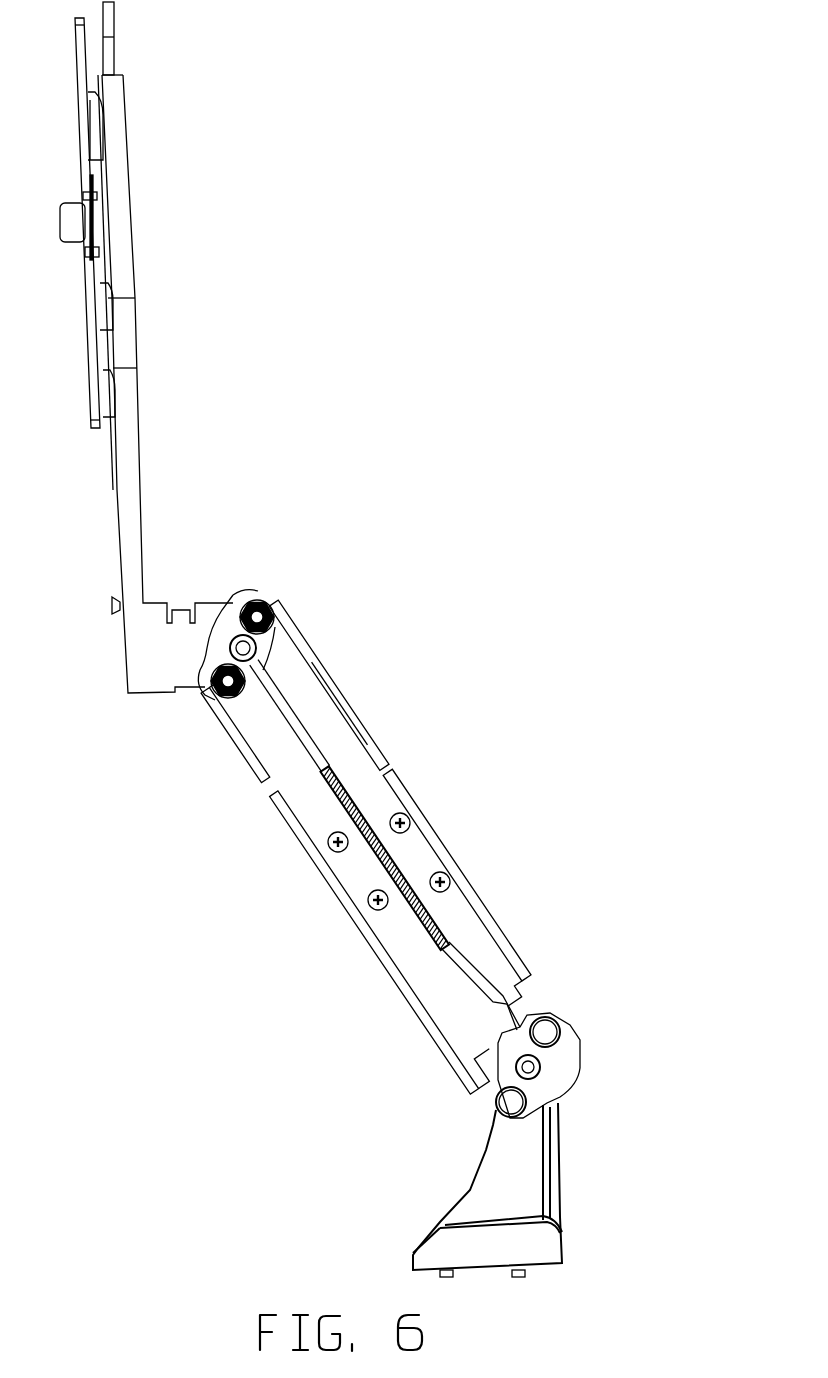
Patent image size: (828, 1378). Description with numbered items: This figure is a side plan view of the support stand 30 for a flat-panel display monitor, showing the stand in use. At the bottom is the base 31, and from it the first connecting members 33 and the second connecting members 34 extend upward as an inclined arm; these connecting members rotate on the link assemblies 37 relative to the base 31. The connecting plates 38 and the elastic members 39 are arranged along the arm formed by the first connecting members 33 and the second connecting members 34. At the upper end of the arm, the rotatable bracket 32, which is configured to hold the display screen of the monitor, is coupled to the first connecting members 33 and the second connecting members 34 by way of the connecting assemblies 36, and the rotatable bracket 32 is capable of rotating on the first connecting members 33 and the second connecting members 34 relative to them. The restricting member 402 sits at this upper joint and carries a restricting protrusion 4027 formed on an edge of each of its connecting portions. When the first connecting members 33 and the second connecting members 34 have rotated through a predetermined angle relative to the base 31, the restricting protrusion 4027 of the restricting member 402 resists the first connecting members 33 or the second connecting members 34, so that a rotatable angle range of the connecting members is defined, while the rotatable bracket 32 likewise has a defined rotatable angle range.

The support stand 30 is at (200, 166).
The base 31 is at (527, 1170).
The rotatable bracket 32 is at (128, 462).
The first connecting members 33 is at (333, 715).
The second connecting members 34 is at (425, 968).
The connecting assemblies 36 is at (273, 603).
The link assemblies 37 is at (555, 1025).
The connecting plates 38 is at (415, 800).
The elastic members 39 is at (383, 858).
The restricting member 402 is at (218, 622).
The restricting protrusion 4027 is at (238, 593).